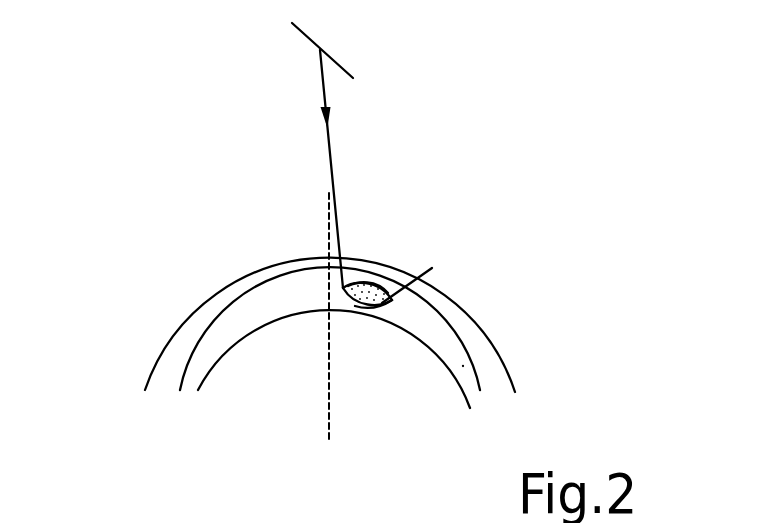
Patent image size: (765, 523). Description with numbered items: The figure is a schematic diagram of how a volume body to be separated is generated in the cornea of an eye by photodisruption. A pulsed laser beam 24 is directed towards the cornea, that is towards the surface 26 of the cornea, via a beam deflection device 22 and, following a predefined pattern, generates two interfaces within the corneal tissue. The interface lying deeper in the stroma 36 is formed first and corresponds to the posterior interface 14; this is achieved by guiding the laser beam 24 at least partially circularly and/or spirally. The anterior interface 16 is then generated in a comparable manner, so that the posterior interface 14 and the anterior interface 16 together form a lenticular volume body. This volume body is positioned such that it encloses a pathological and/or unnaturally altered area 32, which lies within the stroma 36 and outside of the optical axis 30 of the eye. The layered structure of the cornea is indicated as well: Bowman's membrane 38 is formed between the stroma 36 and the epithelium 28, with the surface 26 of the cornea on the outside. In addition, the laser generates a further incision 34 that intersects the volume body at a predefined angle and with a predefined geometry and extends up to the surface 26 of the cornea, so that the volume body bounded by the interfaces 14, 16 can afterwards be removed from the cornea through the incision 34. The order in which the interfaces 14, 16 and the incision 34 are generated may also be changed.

The posterior interface 14 is at (375, 304).
The anterior interface 16 is at (353, 286).
The beam deflection device 22 is at (337, 63).
The pulsed laser beam 24 is at (328, 143).
The surface of the cornea 26 is at (515, 377).
The epithelium 28 is at (473, 334).
The optical axis 30 is at (330, 423).
The pathological and/or unnaturally altered area 32 is at (378, 281).
The incision 34 is at (400, 299).
The stroma 36 is at (465, 365).
The Bowman's membrane 38 is at (202, 328).